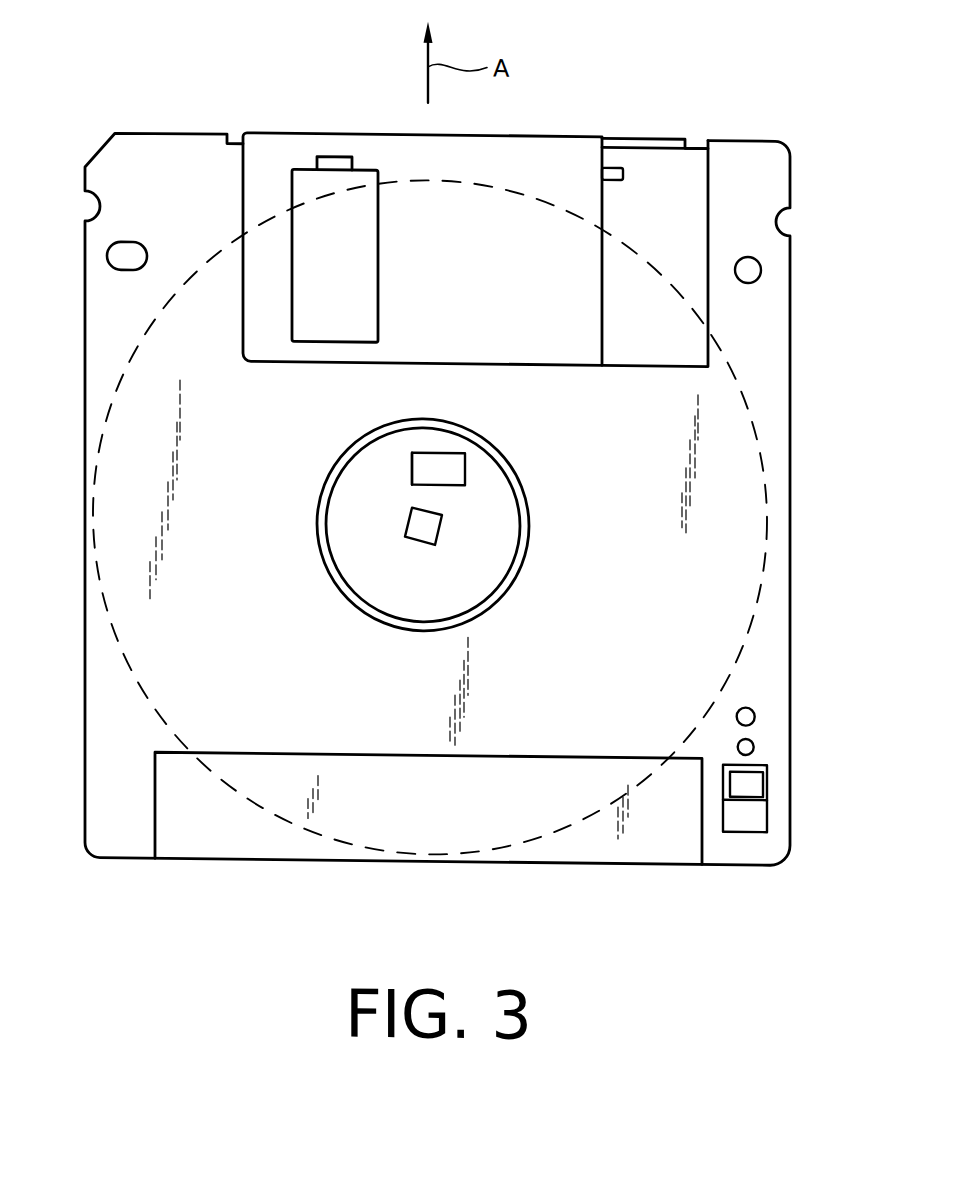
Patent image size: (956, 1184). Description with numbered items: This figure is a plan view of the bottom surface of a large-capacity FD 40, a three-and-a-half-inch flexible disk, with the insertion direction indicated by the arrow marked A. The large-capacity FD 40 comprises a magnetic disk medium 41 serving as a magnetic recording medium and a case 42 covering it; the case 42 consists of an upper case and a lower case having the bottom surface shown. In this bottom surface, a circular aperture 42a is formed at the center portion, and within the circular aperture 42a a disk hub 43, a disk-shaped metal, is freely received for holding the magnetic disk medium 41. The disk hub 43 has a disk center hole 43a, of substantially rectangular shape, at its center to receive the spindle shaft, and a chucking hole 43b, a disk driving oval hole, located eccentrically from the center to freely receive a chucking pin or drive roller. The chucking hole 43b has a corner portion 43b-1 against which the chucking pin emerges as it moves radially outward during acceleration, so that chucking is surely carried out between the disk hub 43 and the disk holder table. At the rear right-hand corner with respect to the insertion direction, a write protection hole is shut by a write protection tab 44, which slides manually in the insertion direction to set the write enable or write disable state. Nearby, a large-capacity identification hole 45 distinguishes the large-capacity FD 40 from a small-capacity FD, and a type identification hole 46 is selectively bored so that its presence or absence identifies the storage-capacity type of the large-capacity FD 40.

The large-capacity FD 40 is at (796, 490).
The magnetic disk medium 41 is at (732, 662).
The case 42 is at (777, 346).
The circular aperture 42a is at (520, 567).
The disk hub 43 is at (497, 511).
The disk center hole 43a is at (421, 526).
The chucking hole 43b is at (448, 457).
The corner portion of the chucking hole 43b-1 is at (410, 447).
The write protection tab 44 is at (752, 778).
The large-capacity identification hole 45 is at (755, 739).
The type identification hole 46 is at (737, 710).